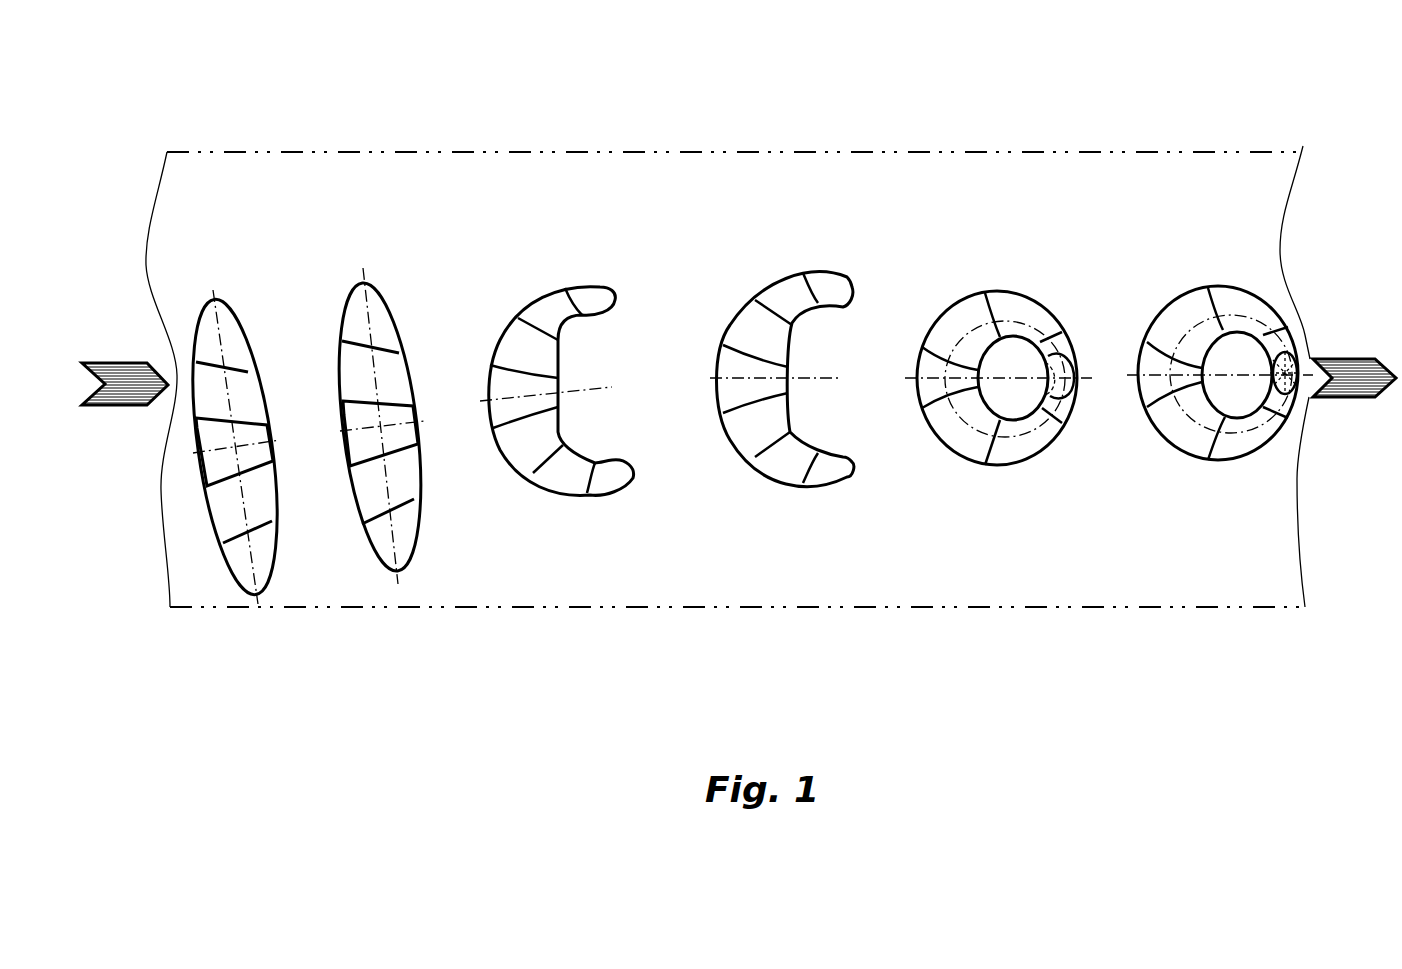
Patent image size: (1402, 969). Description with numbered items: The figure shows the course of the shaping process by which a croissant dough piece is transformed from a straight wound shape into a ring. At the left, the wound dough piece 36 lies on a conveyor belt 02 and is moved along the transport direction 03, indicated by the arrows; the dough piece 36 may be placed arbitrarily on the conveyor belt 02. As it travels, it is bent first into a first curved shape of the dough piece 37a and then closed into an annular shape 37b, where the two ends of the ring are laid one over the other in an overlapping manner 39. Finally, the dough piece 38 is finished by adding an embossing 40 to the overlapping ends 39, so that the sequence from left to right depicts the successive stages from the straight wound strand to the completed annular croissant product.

The conveyor belt 02 is at (1157, 568).
The transport direction 03 is at (1363, 397).
The wound dough piece 36 is at (230, 340).
The first curved shape of the dough piece 37a is at (557, 310).
The annular shape of the dough piece 37b is at (1010, 310).
The finished annular dough piece 38 is at (1187, 317).
The overlapping ends 39 is at (1090, 367).
The embossing 40 is at (1309, 359).